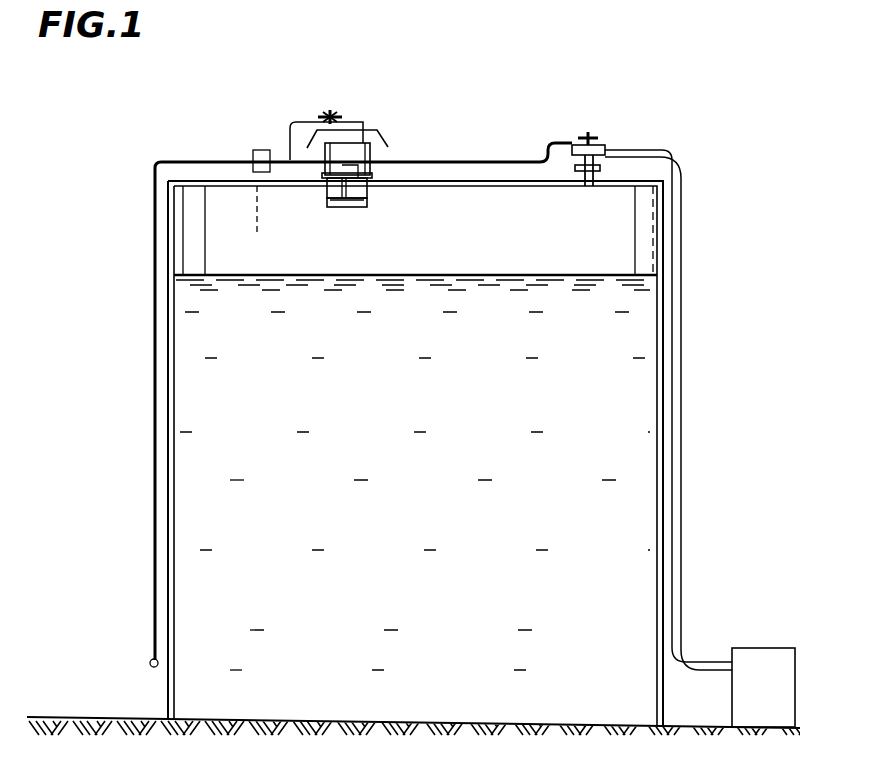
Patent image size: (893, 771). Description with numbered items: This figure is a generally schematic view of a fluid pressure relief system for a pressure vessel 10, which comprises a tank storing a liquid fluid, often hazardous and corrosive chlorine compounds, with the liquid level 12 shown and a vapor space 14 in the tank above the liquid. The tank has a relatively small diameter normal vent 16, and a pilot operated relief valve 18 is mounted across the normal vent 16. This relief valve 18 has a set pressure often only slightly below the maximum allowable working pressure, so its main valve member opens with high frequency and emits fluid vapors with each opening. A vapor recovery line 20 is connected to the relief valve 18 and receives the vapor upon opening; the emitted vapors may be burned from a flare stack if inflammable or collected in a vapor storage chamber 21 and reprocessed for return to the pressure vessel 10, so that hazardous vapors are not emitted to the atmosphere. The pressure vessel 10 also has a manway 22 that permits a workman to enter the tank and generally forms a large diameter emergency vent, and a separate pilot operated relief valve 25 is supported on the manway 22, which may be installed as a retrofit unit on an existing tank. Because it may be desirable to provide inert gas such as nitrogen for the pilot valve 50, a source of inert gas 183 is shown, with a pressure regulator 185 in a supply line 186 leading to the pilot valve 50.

The pressure vessel 10 is at (684, 203).
The liquid level 12 is at (487, 275).
The vapor space 14 is at (397, 230).
The normal vent 16 is at (592, 188).
The pilot operated relief valve 18 is at (600, 140).
The vapor recovery line 20 is at (682, 338).
The vapor storage chamber 21 is at (765, 658).
The manway 22 is at (386, 133).
The pilot operated relief valve 25 is at (372, 158).
The pilot valve 50 is at (334, 106).
The source of inert gas 183 is at (150, 663).
The pressure regulator 185 is at (255, 150).
The supply line 186 is at (508, 161).